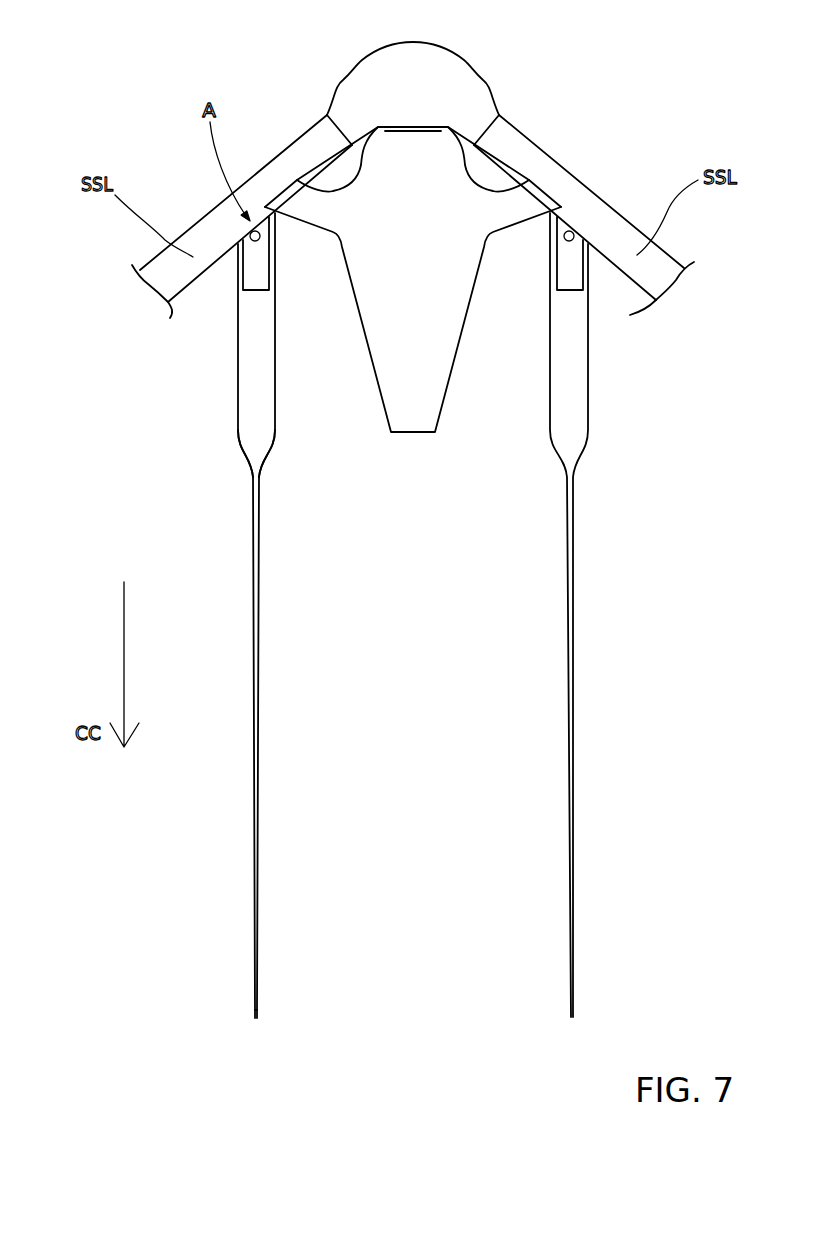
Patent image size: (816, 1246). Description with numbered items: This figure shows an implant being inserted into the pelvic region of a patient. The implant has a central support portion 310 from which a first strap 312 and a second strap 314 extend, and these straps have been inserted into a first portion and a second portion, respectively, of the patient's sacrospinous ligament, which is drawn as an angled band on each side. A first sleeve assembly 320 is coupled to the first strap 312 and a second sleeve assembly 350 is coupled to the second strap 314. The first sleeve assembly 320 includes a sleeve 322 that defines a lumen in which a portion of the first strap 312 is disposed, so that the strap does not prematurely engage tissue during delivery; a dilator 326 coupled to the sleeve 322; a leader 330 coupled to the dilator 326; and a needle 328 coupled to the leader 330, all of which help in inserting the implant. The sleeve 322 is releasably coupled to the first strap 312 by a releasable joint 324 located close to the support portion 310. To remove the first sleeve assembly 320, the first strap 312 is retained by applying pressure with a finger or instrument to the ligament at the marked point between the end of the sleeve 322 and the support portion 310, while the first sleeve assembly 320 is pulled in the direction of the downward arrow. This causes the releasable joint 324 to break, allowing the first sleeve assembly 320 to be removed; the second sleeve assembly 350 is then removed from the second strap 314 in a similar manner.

The support portion 310 is at (420, 410).
The first strap 312 is at (253, 275).
The second strap 314 is at (567, 255).
The first sleeve assembly 320 is at (258, 393).
The sleeve 322 is at (248, 377).
The releasable joint 324 is at (193, 257).
The dilator 326 is at (268, 455).
The needle 328 is at (255, 1018).
The leader 330 is at (255, 760).
The second sleeve assembly 350 is at (573, 551).